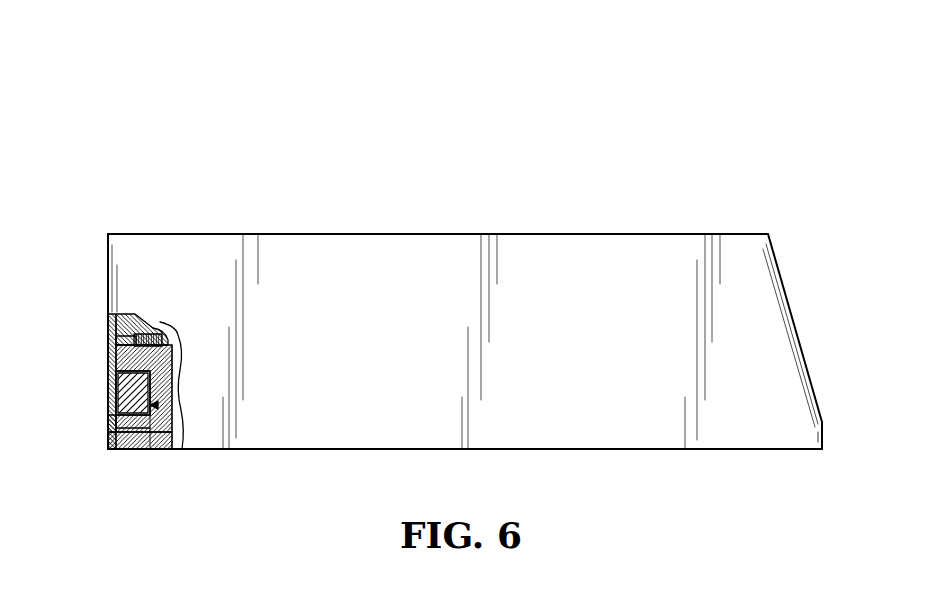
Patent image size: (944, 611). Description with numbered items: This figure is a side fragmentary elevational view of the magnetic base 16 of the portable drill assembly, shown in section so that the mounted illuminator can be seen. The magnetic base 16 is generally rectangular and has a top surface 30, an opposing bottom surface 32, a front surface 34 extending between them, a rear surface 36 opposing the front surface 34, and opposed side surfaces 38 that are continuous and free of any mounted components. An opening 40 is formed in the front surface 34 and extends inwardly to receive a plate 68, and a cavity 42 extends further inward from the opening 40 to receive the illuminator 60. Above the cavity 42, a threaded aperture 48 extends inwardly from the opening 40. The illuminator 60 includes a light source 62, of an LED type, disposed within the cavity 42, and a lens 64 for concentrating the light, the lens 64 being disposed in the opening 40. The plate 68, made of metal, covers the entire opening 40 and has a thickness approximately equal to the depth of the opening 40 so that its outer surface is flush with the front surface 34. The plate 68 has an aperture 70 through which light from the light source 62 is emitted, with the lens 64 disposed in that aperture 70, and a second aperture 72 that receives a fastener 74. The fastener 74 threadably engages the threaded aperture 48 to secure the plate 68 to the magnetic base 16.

The magnetic base 16 is at (722, 101).
The top surface 30 is at (366, 234).
The bottom surface 32 is at (642, 449).
The front surface 34 is at (108, 255).
The rear surface 36 is at (786, 297).
The side surfaces 38 is at (362, 449).
The opening 40 is at (108, 449).
The cavity 42 is at (128, 449).
The threaded aperture 48 is at (150, 338).
The illuminator 60 is at (172, 449).
The light source 62 is at (152, 449).
The lens 64 is at (114, 400).
The plate 68 is at (108, 360).
The aperture 70 is at (110, 429).
The aperture 72 is at (110, 330).
The fastener 74 is at (146, 336).